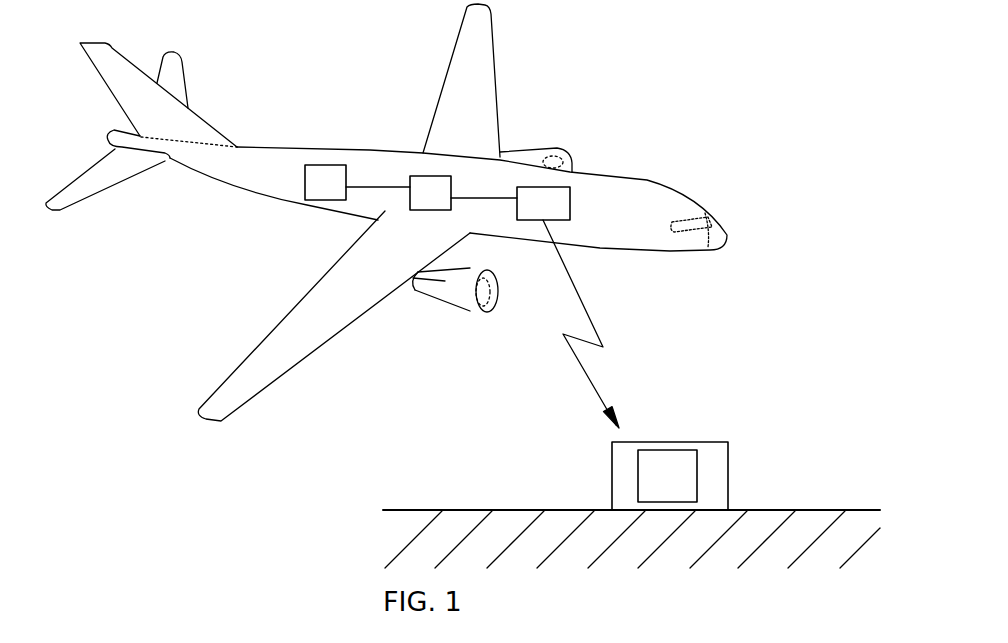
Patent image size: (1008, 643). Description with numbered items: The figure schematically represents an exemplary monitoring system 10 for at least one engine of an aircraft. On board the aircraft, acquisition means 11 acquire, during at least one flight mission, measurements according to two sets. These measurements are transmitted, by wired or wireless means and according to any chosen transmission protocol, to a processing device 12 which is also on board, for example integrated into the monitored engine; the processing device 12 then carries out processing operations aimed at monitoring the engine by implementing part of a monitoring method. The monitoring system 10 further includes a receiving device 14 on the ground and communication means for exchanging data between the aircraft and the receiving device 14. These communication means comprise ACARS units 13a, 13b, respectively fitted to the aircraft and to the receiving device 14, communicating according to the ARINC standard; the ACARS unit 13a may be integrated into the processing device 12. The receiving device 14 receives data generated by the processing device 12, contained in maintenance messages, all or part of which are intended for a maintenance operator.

The monitoring system 10 is at (544, 475).
The acquisition means 11 is at (322, 188).
The processing device 12 is at (427, 198).
The ACARS unit 13a is at (533, 205).
The ACARS unit 13b is at (653, 476).
The receiving device 14 is at (610, 442).